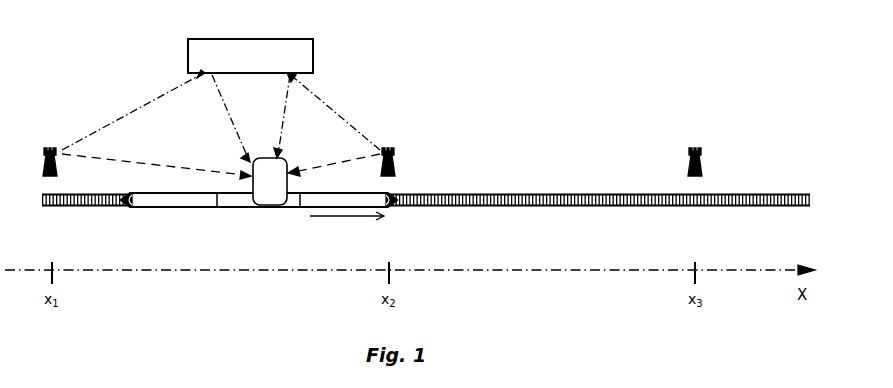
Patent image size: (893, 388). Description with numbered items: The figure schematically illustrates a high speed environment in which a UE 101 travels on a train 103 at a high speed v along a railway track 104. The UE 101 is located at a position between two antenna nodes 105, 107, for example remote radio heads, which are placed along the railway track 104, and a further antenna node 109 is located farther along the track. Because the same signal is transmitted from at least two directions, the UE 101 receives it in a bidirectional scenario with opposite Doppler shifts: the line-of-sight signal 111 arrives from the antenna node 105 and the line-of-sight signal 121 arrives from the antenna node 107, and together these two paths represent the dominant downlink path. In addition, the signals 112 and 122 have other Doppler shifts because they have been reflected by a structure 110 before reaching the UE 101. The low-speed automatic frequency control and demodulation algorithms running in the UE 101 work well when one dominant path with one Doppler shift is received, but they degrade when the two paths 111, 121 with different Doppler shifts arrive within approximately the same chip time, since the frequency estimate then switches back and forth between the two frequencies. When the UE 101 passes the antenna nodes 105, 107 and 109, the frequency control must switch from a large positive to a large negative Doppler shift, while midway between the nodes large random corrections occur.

The UE 101 is at (275, 206).
The train 103 is at (163, 208).
The railway track 104 is at (95, 208).
The antenna node 105 is at (50, 148).
The antenna node 107 is at (392, 148).
The antenna node 109 is at (699, 148).
The structure 110 is at (313, 46).
The line-of-sight signal 111 is at (149, 162).
The signal 112 is at (152, 96).
The line-of-sight signal 121 is at (322, 160).
The signal 122 is at (338, 118).
The speed v is at (352, 218).